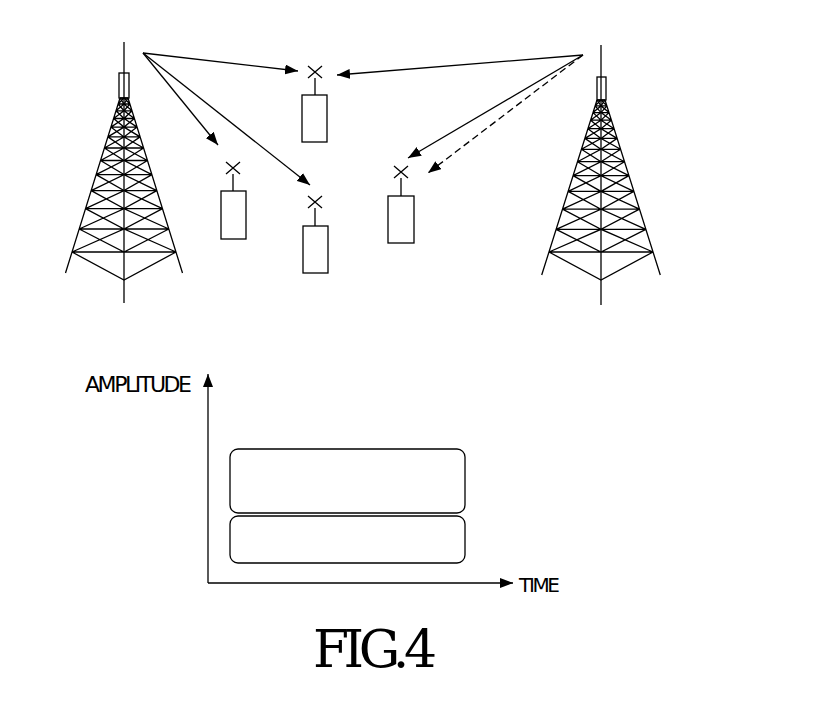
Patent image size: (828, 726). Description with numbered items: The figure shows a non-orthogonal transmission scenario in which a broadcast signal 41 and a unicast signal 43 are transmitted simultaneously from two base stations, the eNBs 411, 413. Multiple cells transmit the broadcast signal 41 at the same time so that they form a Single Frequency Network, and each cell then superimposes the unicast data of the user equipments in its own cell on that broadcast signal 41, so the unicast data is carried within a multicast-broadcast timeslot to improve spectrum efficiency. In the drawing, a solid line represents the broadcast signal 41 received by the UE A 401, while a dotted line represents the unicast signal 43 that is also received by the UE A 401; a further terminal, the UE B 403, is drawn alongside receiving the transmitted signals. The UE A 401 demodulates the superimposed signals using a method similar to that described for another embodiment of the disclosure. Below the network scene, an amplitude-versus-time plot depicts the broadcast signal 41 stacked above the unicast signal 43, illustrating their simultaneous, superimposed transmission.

The eNB 411 is at (118, 90).
The eNB 413 is at (607, 88).
The UE A 401 is at (238, 274).
The UE B 403 is at (407, 287).
The broadcast signal 41 is at (467, 483).
The unicast signal 43 is at (467, 539).